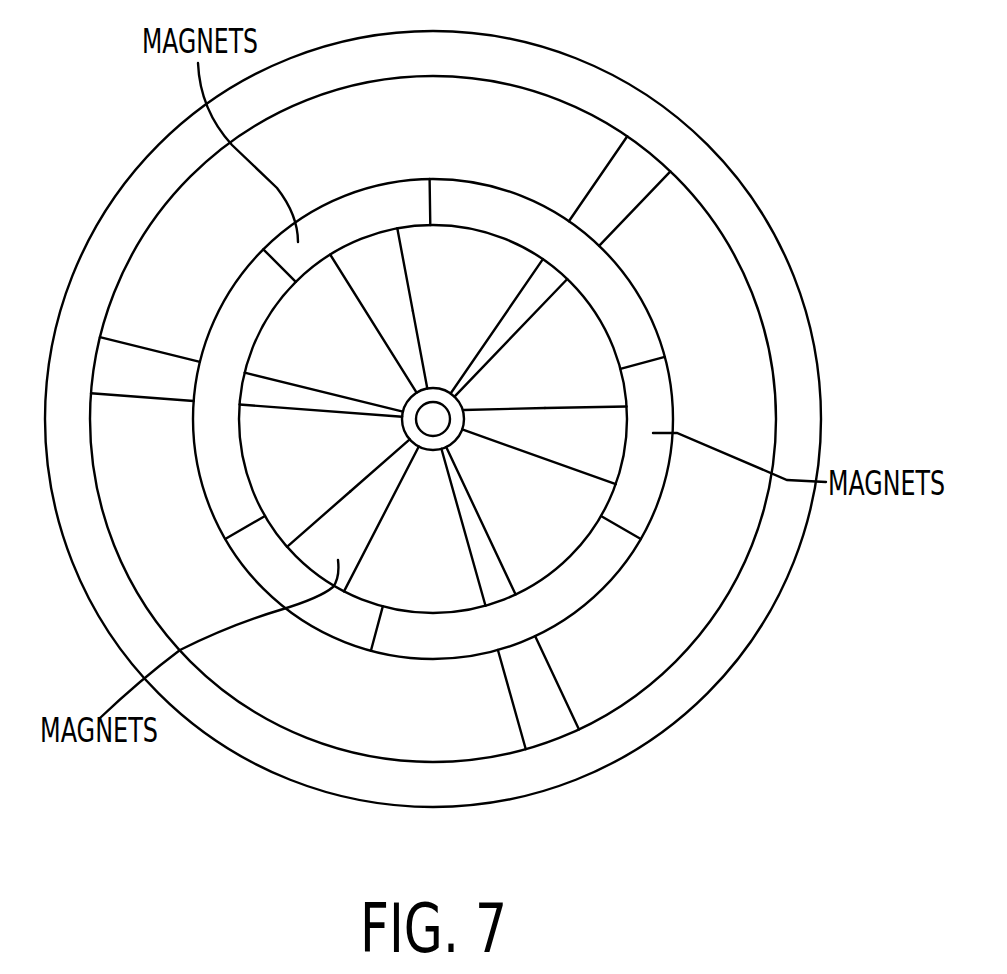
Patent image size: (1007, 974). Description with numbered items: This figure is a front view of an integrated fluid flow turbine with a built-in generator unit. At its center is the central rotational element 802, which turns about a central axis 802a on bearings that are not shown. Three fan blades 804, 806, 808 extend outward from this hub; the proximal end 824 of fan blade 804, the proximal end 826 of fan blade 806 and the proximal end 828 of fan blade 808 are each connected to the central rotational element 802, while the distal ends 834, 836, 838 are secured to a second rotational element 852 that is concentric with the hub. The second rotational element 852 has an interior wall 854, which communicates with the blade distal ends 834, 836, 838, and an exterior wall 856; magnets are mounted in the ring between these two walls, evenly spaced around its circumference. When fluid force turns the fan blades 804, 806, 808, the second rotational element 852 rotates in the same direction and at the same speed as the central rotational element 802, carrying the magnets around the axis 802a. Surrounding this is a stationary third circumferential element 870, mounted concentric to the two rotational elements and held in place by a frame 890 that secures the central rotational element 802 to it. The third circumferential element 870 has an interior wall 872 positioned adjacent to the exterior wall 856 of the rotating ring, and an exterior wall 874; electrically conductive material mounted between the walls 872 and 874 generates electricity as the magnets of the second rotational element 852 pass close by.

The central rotational element 802 is at (455, 441).
The central axis 802a is at (442, 412).
The fan blade 804 is at (357, 260).
The fan blade 806 is at (608, 435).
The fan blade 808 is at (317, 550).
The proximal end 824 is at (418, 363).
The proximal end 826 is at (503, 425).
The proximal end 828 is at (382, 468).
The distal end 834 is at (380, 257).
The distal end 836 is at (600, 463).
The distal end 838 is at (295, 587).
The second rotational element 852 is at (407, 642).
The interior wall 854 is at (445, 613).
The exterior wall 856 is at (450, 660).
The third circumferential element 870 is at (745, 223).
The interior wall 872 is at (718, 232).
The exterior wall 874 is at (797, 282).
The frame 890 is at (140, 355).